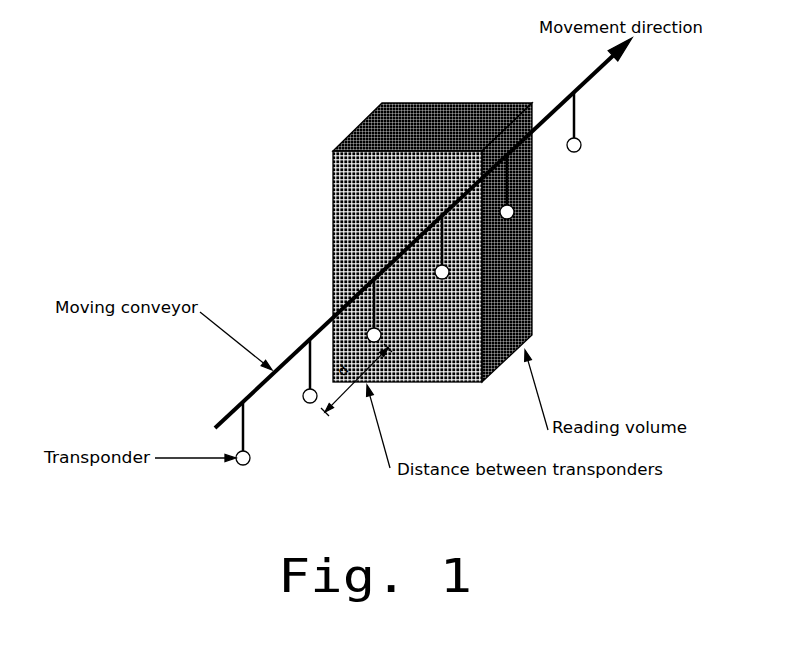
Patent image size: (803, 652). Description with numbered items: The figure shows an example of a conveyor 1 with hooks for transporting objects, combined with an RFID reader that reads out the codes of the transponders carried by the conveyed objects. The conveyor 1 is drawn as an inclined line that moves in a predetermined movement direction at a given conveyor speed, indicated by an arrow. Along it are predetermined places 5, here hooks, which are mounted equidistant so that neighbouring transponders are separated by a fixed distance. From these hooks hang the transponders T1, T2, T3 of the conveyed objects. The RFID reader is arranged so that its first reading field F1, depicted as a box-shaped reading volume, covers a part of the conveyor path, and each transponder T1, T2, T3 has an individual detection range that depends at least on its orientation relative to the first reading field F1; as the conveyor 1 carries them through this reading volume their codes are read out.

The conveyor 1 is at (250, 290).
The predetermined place 5 is at (577, 105).
The first reading field F1 is at (389, 238).
The transponder T1 is at (209, 473).
The transponder T2 is at (287, 423).
The transponder T3 is at (602, 192).